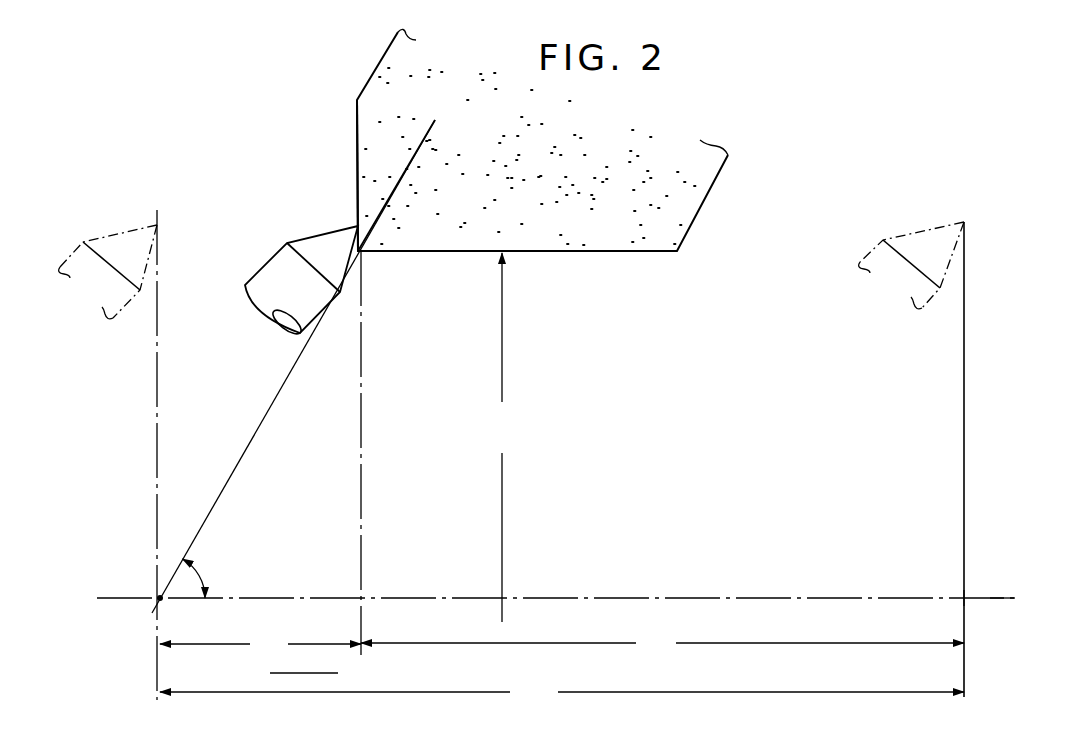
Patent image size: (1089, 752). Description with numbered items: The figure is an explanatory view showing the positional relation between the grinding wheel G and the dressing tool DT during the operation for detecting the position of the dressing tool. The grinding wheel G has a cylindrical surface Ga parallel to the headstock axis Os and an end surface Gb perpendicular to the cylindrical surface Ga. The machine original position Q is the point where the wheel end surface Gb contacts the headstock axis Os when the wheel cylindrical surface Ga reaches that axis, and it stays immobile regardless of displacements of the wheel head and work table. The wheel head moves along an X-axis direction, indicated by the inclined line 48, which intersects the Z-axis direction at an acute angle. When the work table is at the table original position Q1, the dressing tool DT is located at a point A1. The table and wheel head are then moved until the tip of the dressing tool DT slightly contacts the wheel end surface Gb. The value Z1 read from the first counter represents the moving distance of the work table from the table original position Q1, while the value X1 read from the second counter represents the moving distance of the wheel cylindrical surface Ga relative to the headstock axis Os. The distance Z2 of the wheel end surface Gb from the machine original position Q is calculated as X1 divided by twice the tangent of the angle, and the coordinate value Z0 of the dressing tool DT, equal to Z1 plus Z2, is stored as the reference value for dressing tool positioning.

The grinding wheel G is at (697, 181).
The cylindrical surface Ga is at (662, 252).
The end surface Gb is at (357, 131).
The dressing tool DT is at (272, 268).
The dressing tool path line 48 is at (258, 432).
The machine original position Q is at (158, 596).
The table original position Q1 is at (966, 597).
The headstock axis Os is at (996, 597).
The point A1 is at (963, 222).
The wheel present position value X1 is at (504, 437).
The table present position value Z1 is at (662, 642).
The distance of wheel side surface Z2 is at (260, 664).
The coordinate value of the dressing tool Z0 is at (562, 691).